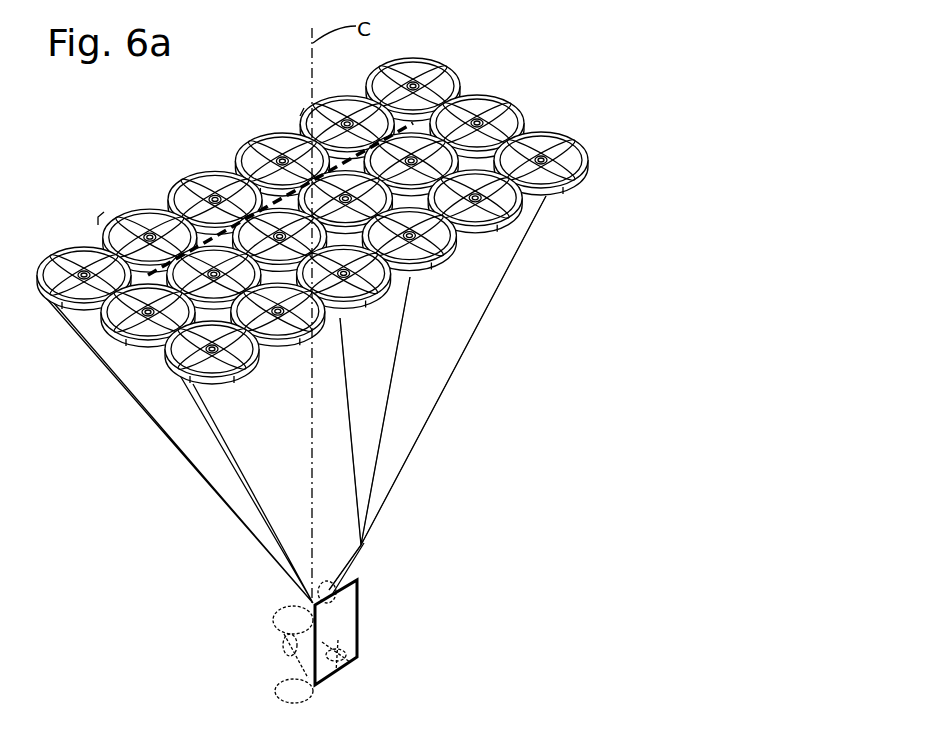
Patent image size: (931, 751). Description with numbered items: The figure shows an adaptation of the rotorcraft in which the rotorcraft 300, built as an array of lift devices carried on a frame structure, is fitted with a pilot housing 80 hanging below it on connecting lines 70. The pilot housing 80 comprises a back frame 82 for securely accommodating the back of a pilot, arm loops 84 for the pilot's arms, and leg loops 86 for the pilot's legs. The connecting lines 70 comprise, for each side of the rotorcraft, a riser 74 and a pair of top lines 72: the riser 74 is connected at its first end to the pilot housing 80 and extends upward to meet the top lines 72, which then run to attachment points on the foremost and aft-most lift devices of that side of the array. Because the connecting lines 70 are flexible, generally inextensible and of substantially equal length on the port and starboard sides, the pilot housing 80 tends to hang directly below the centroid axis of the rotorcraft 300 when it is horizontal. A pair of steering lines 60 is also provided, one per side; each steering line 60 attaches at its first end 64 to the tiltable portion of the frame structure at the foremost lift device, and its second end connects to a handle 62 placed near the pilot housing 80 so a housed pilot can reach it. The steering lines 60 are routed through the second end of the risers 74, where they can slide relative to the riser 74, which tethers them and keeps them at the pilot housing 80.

The rotorcraft 300 is at (563, 106).
The first end of steering line 64 is at (104, 212).
The steering line 60 is at (235, 453).
The connecting lines 70 is at (450, 413).
The top lines 72 is at (453, 373).
The riser 74 is at (365, 562).
The pilot housing 80 is at (382, 578).
The back frame 82 is at (339, 664).
The arm loops 84 is at (273, 620).
The handle 62 is at (283, 645).
The leg loops 86 is at (277, 690).